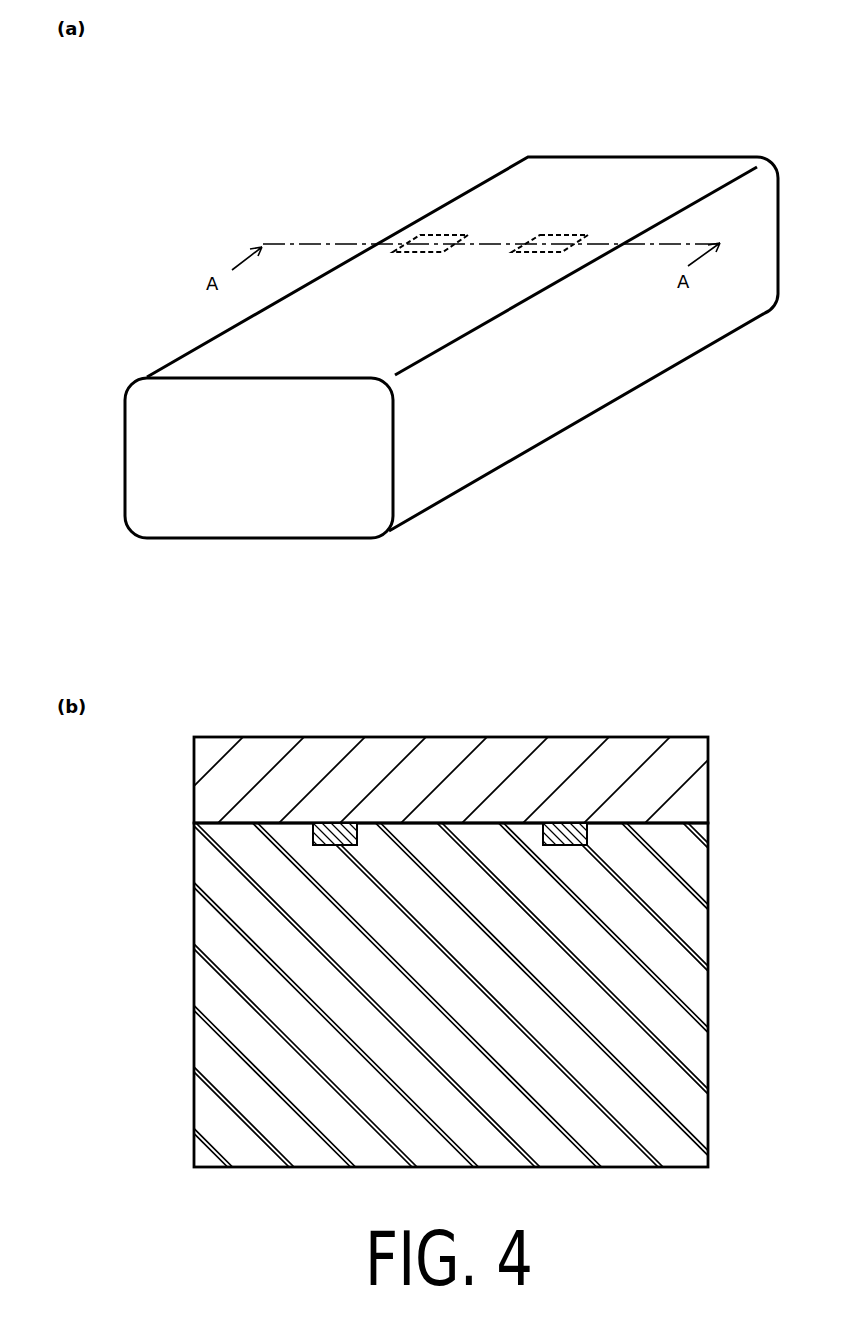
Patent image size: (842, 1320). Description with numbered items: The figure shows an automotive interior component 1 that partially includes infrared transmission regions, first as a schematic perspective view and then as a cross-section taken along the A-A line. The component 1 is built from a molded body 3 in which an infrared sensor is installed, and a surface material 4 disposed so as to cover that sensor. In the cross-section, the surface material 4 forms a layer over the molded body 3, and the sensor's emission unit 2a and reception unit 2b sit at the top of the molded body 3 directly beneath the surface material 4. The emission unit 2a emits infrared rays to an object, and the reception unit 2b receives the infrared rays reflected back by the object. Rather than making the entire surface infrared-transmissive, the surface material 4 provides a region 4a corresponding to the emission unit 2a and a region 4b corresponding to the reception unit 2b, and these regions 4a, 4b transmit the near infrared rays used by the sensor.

The automotive interior component 1 is at (378, 110).
The molded body 3 is at (708, 1047).
The surface material 4 is at (595, 165).
The region corresponding to the emission unit 4a is at (567, 233).
The region corresponding to the reception unit 4b is at (432, 234).
The emission unit 2a is at (568, 847).
The reception unit 2b is at (323, 844).